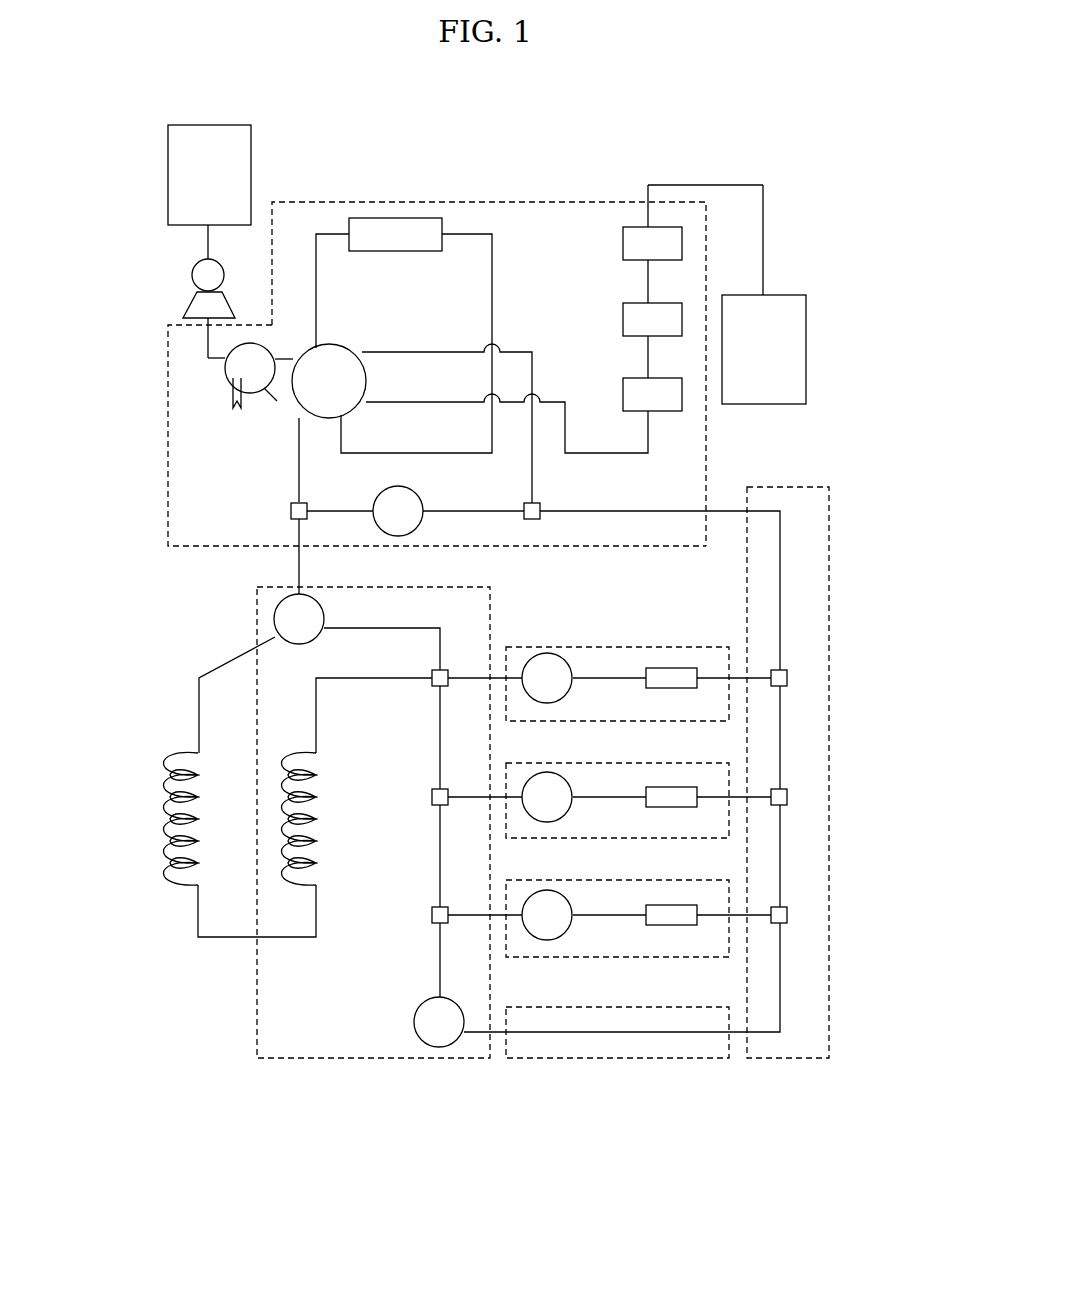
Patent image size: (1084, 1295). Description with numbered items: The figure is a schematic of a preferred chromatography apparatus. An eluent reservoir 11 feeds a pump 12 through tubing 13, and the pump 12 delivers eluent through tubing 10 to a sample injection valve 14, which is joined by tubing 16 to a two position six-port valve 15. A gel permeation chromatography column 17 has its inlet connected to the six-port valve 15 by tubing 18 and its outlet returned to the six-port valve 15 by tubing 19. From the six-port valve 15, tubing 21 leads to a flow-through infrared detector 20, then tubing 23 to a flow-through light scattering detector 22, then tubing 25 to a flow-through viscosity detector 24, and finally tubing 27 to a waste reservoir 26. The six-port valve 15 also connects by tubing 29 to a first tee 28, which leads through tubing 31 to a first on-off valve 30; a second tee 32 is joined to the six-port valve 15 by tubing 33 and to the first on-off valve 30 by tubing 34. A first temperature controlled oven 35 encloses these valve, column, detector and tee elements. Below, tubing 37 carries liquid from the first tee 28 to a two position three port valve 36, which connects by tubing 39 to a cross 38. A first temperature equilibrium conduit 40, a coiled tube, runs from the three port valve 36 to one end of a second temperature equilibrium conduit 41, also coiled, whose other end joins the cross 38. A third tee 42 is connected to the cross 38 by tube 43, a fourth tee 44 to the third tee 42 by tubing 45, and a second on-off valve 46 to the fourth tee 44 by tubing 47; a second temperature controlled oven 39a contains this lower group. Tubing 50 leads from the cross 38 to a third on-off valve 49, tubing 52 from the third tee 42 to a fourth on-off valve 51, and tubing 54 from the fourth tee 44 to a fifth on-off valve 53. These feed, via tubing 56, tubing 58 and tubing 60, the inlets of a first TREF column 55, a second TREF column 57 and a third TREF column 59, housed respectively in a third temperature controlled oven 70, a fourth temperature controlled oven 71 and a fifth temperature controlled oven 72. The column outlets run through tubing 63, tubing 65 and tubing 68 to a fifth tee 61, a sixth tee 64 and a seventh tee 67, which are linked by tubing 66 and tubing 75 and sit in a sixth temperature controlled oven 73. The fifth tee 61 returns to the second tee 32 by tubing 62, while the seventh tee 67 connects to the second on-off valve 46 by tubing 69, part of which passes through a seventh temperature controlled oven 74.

The tubing 10 is at (206, 359).
The eluent reservoir 11 is at (169, 165).
The pump 12 is at (191, 280).
The tubing 13 is at (207, 246).
The sample injection valve 14 is at (226, 378).
The two position six-port valve 15 is at (334, 345).
The tubing 16 is at (292, 356).
The gel permeation chromatography column 17 is at (398, 253).
The tubing 18 is at (315, 283).
The tubing 19 is at (494, 285).
The flow-through infrared detector 20 is at (622, 393).
The tubing 21 is at (437, 399).
The flow-through light scattering detector 22 is at (622, 318).
The tubing 23 is at (646, 357).
The flow-through viscosity detector 24 is at (622, 238).
The tubing 25 is at (646, 282).
The waste reservoir 26 is at (768, 404).
The tubing 27 is at (765, 236).
The first tee 28 is at (290, 505).
The tubing 29 is at (297, 440).
The first on-off valve 30 is at (422, 500).
The tubing 31 is at (344, 509).
The second tee 32 is at (541, 503).
The tubing 33 is at (437, 350).
The tubing 34 is at (495, 509).
The first temperature controlled oven 35 is at (388, 200).
The two position three port valve 36 is at (299, 646).
The tubing 37 is at (297, 568).
The cross 38 is at (430, 688).
The tubing 39 is at (376, 626).
The second temperature controlled oven 39a is at (320, 1060).
The first temperature equilibrium conduit 40 is at (166, 810).
The second temperature equilibrium conduit 41 is at (319, 840).
The third tee 42 is at (430, 800).
The tube 43 is at (438, 760).
The fourth tee 44 is at (430, 916).
The tubing 45 is at (438, 858).
The second on-off valve 46 is at (413, 1026).
The tubing 47 is at (438, 968).
The third on-off valve 49 is at (575, 690).
The tubing 50 is at (468, 676).
The fourth on-off valve 51 is at (575, 808).
The tubing 52 is at (468, 795).
The fifth on-off valve 53 is at (575, 928).
The tubing 54 is at (468, 913).
The first TREF column 55 is at (673, 690).
The tubing 56 is at (607, 681).
The second TREF column 57 is at (673, 808).
The tubing 58 is at (607, 800).
The third TREF column 59 is at (673, 926).
The tubing 60 is at (607, 918).
The fifth tee 61 is at (789, 678).
The tubing 62 is at (620, 509).
The tubing 63 is at (760, 676).
The sixth tee 64 is at (789, 797).
The tubing 65 is at (760, 795).
The tubing 66 is at (783, 738).
The seventh tee 67 is at (789, 914).
The tubing 68 is at (760, 913).
The tubing 69 is at (783, 1000).
The third temperature controlled oven 70 is at (678, 645).
The fourth temperature controlled oven 71 is at (690, 760).
The fifth temperature controlled oven 72 is at (694, 878).
The sixth temperature controlled oven 73 is at (831, 1012).
The seventh temperature controlled oven 74 is at (685, 1062).
The tubing 75 is at (783, 858).